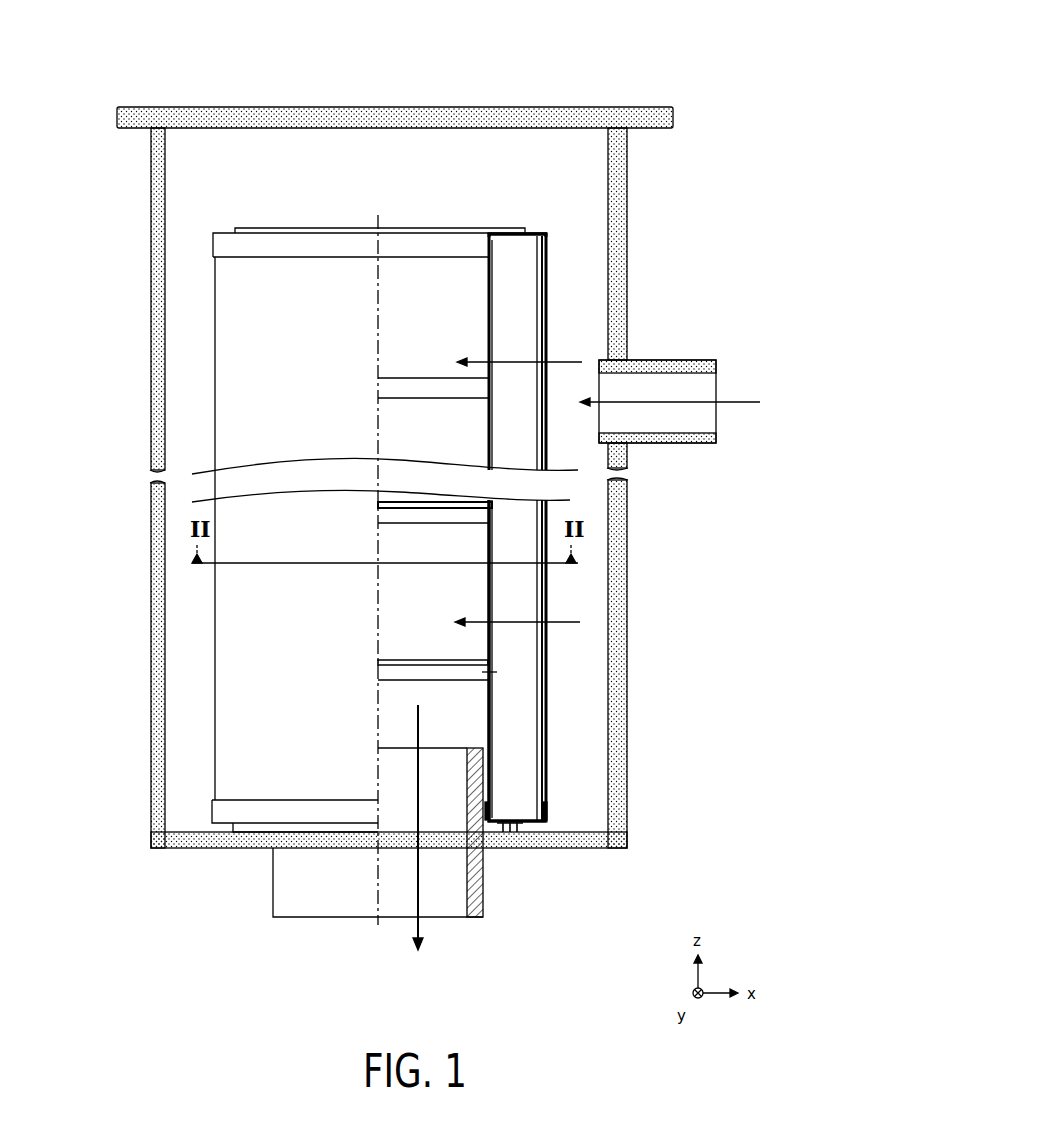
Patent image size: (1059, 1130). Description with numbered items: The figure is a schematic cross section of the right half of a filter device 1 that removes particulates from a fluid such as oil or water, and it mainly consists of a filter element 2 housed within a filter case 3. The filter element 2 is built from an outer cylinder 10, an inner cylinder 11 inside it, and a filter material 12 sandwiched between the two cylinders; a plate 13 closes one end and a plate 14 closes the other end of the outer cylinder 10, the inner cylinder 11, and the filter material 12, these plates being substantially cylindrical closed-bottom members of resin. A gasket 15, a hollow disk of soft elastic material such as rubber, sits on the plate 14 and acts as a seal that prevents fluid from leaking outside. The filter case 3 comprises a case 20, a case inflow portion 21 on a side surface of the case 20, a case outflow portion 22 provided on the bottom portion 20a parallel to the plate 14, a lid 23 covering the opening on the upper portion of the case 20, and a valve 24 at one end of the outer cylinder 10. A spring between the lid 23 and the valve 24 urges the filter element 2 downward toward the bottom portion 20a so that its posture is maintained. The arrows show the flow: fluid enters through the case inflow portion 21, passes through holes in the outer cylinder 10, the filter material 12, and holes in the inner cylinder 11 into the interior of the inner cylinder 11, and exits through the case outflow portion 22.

The filter device 1 is at (683, 46).
The filter element 2 is at (577, 228).
The filter case 3 is at (556, 88).
The outer cylinder 10 is at (547, 272).
The inner cylinder 11 is at (492, 338).
The filter material 12 is at (530, 736).
The plate 13 is at (530, 233).
The plate 14 is at (545, 815).
The gasket 15 is at (512, 832).
The case 20 is at (152, 586).
The bottom portion 20a is at (282, 848).
The case inflow portion 21 is at (667, 443).
The case outflow portion 22 is at (483, 917).
The lid 23 is at (262, 108).
The valve 24 is at (374, 231).